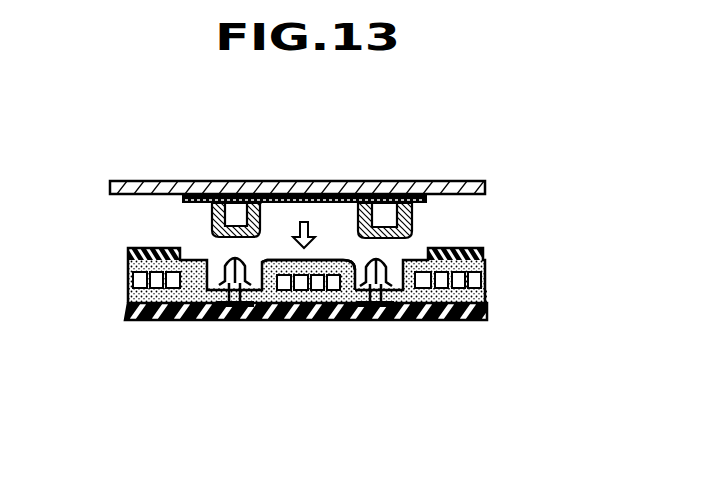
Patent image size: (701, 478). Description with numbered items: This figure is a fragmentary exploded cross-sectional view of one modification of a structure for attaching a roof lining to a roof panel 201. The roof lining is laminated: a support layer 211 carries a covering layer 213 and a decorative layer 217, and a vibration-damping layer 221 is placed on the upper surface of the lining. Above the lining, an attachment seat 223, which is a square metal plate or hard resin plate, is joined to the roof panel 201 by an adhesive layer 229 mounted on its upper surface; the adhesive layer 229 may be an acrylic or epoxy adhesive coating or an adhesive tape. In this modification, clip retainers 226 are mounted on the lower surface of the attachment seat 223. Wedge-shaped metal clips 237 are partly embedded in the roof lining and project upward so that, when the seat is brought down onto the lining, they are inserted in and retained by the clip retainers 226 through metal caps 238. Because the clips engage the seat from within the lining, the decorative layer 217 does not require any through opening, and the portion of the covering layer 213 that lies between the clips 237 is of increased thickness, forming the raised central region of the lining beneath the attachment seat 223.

The circuit board / substrate plate 201 is at (440, 180).
The attachment seat 223 is at (332, 196).
The adhesive layer 229 is at (253, 198).
The clip retainers 226 is at (193, 195).
The covering layer 213 is at (273, 258).
The contact projections 238 is at (190, 238).
The vibration-damping layer 221 is at (465, 247).
The support layer 211 is at (128, 285).
The wedge-shaped metal clips 237 is at (227, 321).
The decorative layer 217 is at (281, 321).